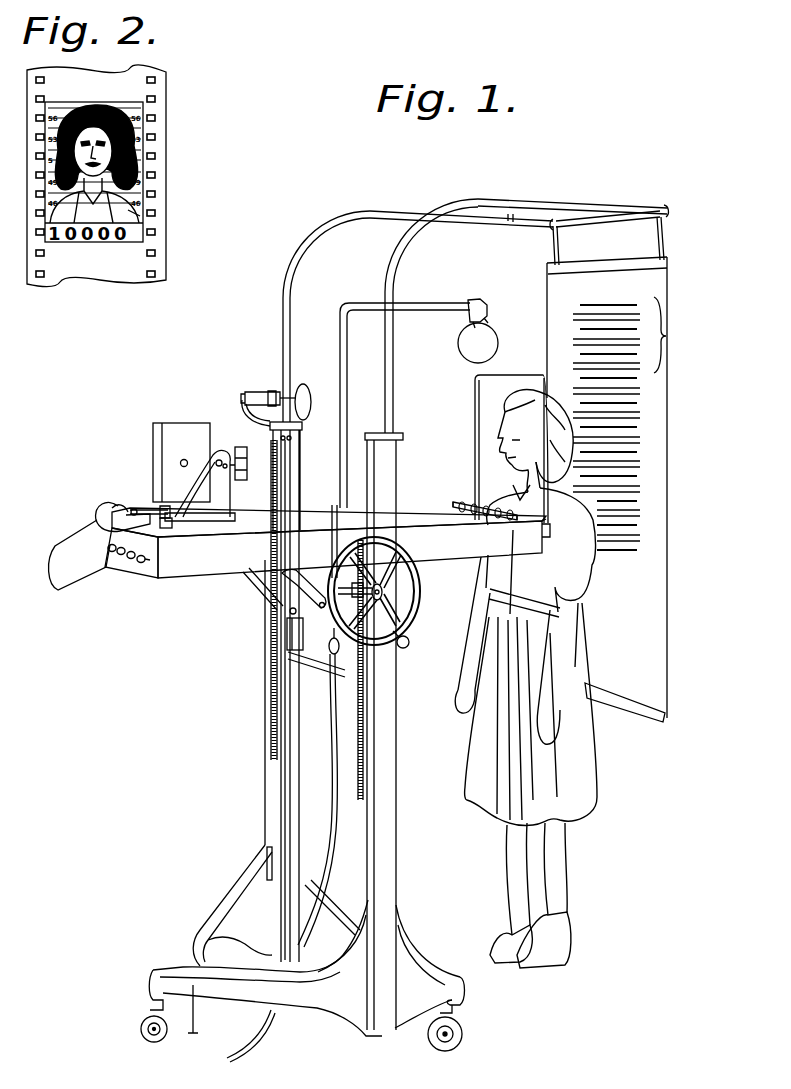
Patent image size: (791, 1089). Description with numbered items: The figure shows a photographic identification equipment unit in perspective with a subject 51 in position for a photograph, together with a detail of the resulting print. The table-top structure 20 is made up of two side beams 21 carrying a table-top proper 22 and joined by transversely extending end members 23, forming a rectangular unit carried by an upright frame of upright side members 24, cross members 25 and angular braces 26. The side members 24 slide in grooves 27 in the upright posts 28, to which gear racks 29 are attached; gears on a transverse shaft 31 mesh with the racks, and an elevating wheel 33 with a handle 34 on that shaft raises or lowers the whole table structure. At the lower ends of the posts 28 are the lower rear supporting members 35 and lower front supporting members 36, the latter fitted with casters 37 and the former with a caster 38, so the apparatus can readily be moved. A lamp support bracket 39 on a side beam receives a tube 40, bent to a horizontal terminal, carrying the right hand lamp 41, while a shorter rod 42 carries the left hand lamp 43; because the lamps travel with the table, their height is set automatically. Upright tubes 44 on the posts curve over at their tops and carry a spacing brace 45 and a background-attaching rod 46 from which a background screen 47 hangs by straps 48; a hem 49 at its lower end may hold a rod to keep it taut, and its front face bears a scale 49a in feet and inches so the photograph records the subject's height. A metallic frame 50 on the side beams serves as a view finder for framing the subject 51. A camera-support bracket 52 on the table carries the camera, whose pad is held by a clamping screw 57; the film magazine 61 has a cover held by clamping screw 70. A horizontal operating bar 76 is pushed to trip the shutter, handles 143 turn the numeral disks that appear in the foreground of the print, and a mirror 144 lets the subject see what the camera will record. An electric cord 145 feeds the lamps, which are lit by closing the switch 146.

In FIG. 1, the table-top structure 20 is at (246, 501).
In FIG. 1, the side beams 21 is at (440, 512).
In FIG. 1, the table-top proper 22 is at (260, 516).
In FIG. 1, the end members 23 is at (153, 570).
In FIG. 1, the upright side members 24 is at (290, 638).
In FIG. 1, the cross members 25 is at (318, 672).
In FIG. 1, the angular braces 26 is at (313, 575).
In FIG. 1, the grooves 27 is at (288, 723).
In FIG. 1, the upright posts 28 is at (395, 732).
In FIG. 1, the gear racks 29 is at (271, 706).
In FIG. 1, the transverse shaft 31 is at (387, 591).
In FIG. 1, the elevating or table-positioning wheel 33 is at (419, 614).
In FIG. 1, the handle 34 is at (407, 646).
In FIG. 1, the lower rear supporting members 35 is at (232, 910).
In FIG. 1, the lower front supporting members 36 is at (330, 923).
In FIG. 1, the casters 37 is at (463, 1030).
In FIG. 1, the caster 38 is at (155, 1043).
In FIG. 1, the lamp support bracket 39 is at (333, 517).
In FIG. 1, the lamp support tube 40 is at (433, 303).
In FIG. 1, the right hand lamp 41 is at (497, 326).
In FIG. 1, the lamp support tube or rod 42 is at (247, 392).
In FIG. 1, the left hand lamp 43 is at (308, 404).
In FIG. 1, the upright tubes or rods 44 is at (336, 226).
In FIG. 1, the spacing tube, rod or brace 45 is at (437, 208).
In FIG. 1, the background-attaching tube or rod 46 is at (608, 215).
In FIG. 1, the background screen 47 is at (658, 446).
In FIG. 1, the straps 48 is at (553, 244).
In FIG. 1, the hem 49 is at (643, 710).
In FIG. 1, the scale 49a is at (676, 335).
In FIG. 1, the metallic frame 50 is at (475, 428).
In FIG. 2, the photographic subject 51 is at (137, 215).
In FIG. 1, the photographic subject 51 is at (570, 565).
In FIG. 1, the camera-support bracket 52 is at (166, 522).
In FIG. 1, the clamping screw 57 is at (217, 470).
In FIG. 1, the film magazine 61 is at (157, 423).
In FIG. 1, the clamping screw 70 is at (185, 459).
In FIG. 1, the operating bar 76 is at (142, 510).
In FIG. 1, the handles 143 is at (135, 563).
In FIG. 1, the mirror 144 is at (240, 447).
In FIG. 1, the electric cord 145 is at (258, 1041).
In FIG. 1, the switch 146 is at (330, 647).